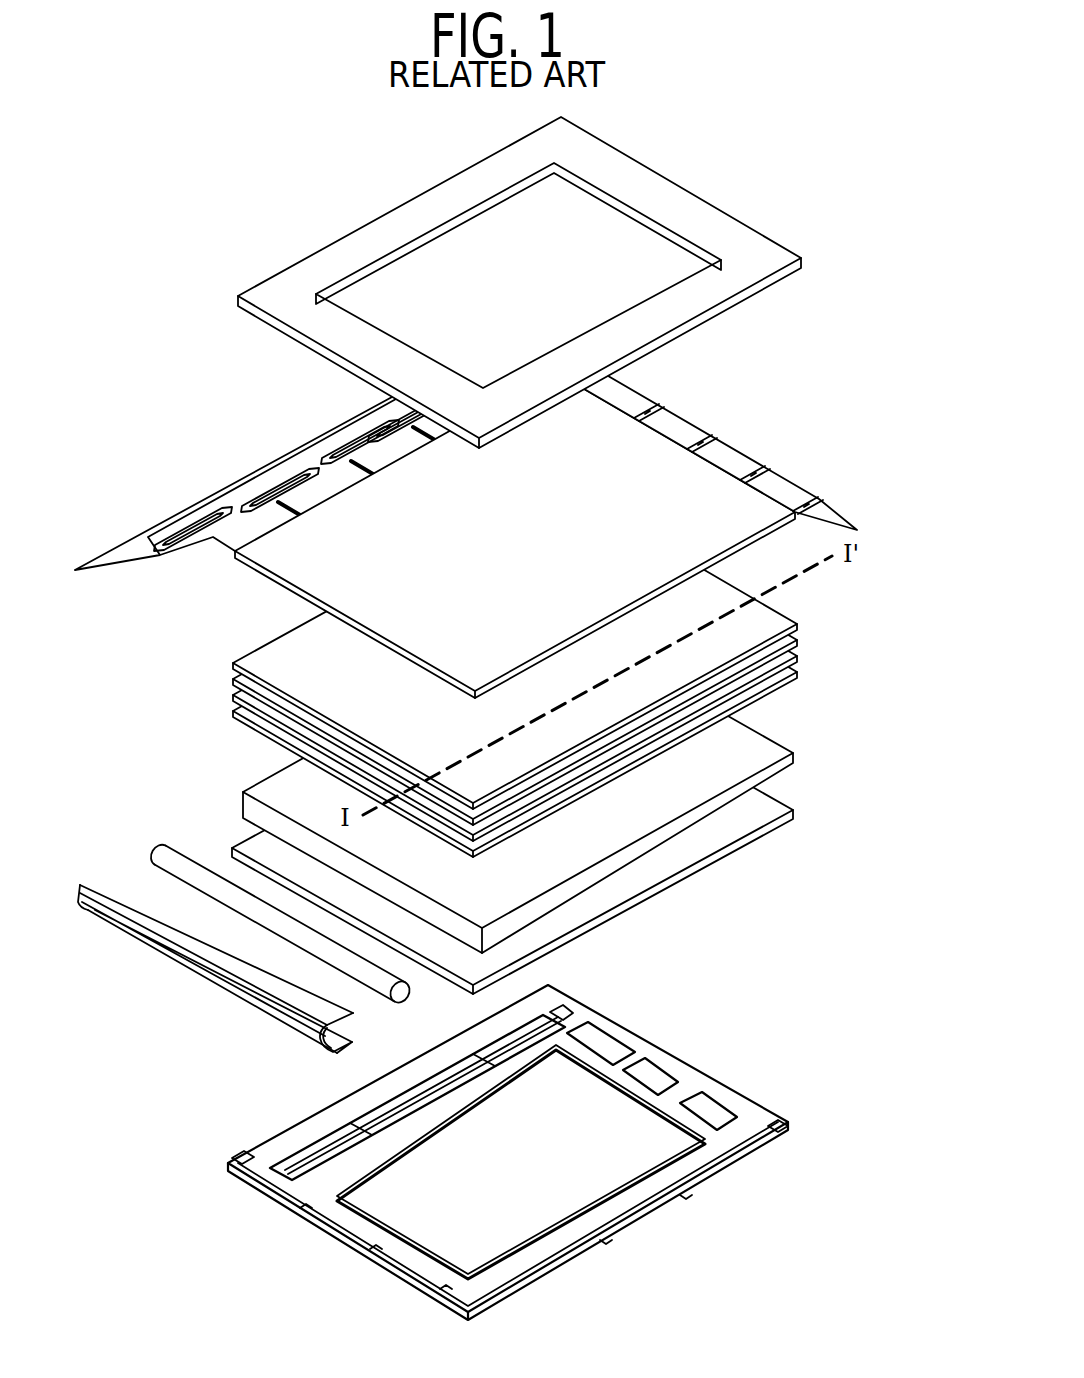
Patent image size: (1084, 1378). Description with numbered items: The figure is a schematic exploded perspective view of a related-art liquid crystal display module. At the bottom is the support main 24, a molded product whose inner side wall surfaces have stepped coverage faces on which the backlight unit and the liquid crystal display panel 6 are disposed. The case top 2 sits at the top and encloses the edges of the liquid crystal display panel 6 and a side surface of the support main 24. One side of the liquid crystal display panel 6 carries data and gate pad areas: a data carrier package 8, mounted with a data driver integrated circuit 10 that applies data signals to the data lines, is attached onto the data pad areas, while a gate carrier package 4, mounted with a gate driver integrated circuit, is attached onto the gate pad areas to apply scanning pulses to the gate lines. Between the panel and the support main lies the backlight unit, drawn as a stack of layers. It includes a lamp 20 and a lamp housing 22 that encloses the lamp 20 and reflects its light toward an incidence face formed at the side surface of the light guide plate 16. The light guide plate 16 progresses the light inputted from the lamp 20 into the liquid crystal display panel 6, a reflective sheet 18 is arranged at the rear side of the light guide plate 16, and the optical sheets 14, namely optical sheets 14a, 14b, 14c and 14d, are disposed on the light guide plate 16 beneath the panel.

The case top 2 is at (770, 251).
The gate carrier package 4 is at (554, 528).
The liquid crystal display panel 6 is at (625, 422).
The data carrier package 8 is at (370, 458).
The data driver integrated circuit 10 is at (273, 482).
The optical sheets 14 is at (589, 670).
The optical sheet 14a is at (797, 627).
The optical sheet 14b is at (797, 643).
The optical sheet 14c is at (797, 660).
The optical sheet 14d is at (797, 677).
The light guide plate 16 is at (795, 767).
The reflective sheet 18 is at (795, 818).
The lamp 20 is at (163, 852).
The lamp housing 22 is at (100, 870).
The support main 24 is at (763, 1108).